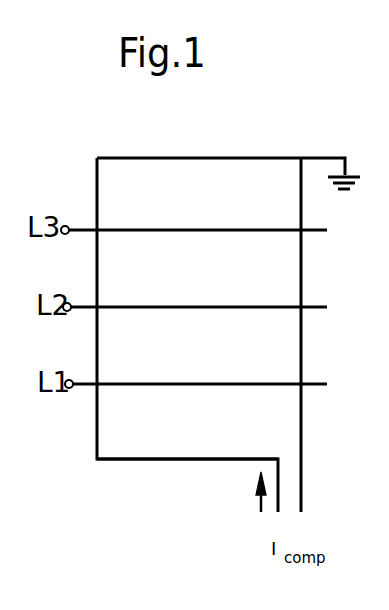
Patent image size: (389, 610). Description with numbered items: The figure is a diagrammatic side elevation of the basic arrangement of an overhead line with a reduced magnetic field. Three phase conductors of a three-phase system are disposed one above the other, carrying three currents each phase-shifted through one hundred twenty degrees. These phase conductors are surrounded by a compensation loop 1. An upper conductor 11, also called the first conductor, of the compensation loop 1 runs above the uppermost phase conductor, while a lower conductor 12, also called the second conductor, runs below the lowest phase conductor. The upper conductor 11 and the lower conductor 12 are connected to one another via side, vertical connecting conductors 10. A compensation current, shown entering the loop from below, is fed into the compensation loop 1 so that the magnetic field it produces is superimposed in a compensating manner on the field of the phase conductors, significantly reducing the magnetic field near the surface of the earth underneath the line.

The compensation loop 1 is at (237, 157).
The vertical connecting conductors 10 is at (96, 413).
The upper conductor 11 is at (143, 157).
The lower conductor 12 is at (155, 460).